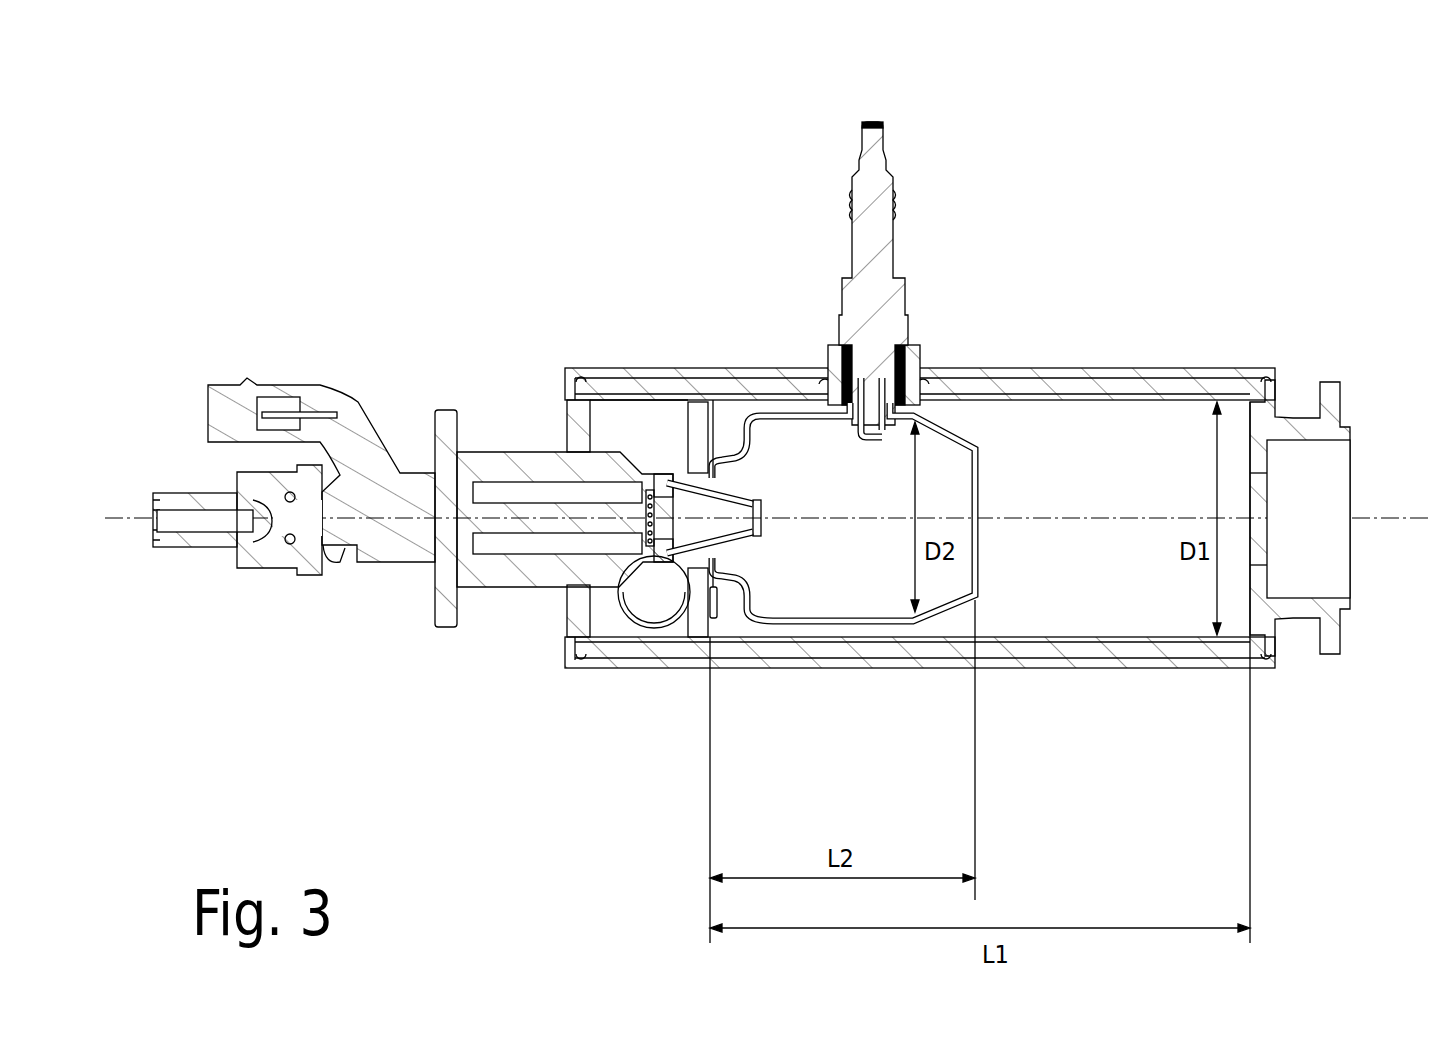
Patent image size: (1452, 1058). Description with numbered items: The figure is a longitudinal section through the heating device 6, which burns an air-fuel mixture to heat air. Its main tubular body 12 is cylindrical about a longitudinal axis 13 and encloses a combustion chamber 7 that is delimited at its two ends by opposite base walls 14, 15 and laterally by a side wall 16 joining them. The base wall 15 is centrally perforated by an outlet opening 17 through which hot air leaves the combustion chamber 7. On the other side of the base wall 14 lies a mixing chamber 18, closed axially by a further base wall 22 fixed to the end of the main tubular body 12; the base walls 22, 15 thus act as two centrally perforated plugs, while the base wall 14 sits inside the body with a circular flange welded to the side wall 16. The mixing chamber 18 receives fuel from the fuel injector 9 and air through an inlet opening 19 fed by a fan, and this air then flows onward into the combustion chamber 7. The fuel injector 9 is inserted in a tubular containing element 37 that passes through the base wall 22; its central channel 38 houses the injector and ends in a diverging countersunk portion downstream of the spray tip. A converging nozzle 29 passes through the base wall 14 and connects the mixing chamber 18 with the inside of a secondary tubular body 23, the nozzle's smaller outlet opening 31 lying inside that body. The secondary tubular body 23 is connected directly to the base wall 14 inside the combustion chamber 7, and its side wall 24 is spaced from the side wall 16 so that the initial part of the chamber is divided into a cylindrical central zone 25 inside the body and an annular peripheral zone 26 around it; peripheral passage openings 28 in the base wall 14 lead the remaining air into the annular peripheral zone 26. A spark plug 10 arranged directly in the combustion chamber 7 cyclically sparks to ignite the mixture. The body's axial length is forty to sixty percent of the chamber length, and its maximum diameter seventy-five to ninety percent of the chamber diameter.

The heating device 6 is at (1233, 136).
The combustion chamber 7 is at (1145, 590).
The fuel injector 9 is at (405, 540).
The spark plug 10 is at (875, 290).
The main tubular body 12 is at (1060, 270).
The longitudinal axis 13 is at (142, 522).
The base wall 14 is at (714, 417).
The base wall 15 is at (1268, 412).
The side wall 16 is at (1027, 662).
The outlet opening 17 is at (1282, 493).
The mixing chamber 18 is at (647, 426).
The inlet opening 19 is at (652, 585).
The base wall 22 is at (580, 417).
The secondary tubular body 23 is at (1047, 482).
The side wall 24 is at (797, 413).
The cylindrical central zone 25 is at (810, 555).
The annular peripheral zone 26 is at (857, 635).
The peripheral passage openings 28 is at (694, 621).
The converging nozzle 29 is at (740, 497).
The outlet opening 31 is at (780, 507).
The tubular containing element 37 is at (507, 465).
The central channel 38 is at (503, 550).